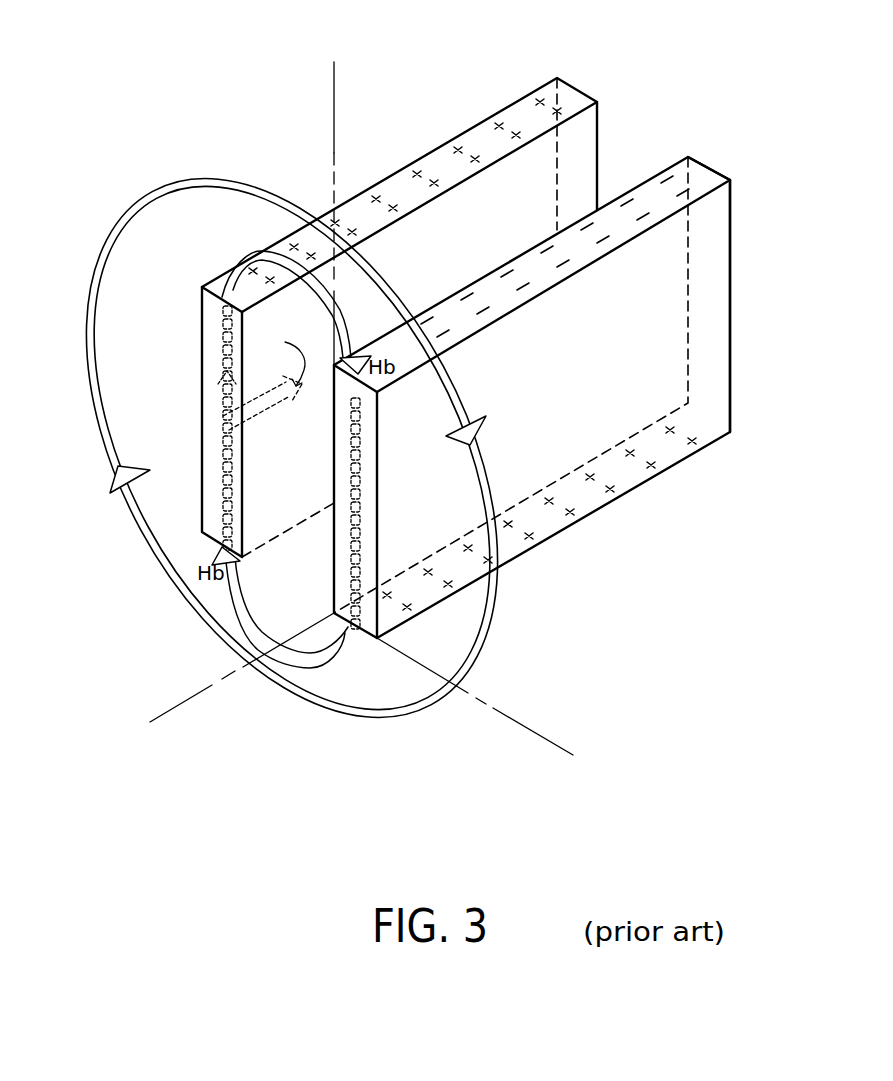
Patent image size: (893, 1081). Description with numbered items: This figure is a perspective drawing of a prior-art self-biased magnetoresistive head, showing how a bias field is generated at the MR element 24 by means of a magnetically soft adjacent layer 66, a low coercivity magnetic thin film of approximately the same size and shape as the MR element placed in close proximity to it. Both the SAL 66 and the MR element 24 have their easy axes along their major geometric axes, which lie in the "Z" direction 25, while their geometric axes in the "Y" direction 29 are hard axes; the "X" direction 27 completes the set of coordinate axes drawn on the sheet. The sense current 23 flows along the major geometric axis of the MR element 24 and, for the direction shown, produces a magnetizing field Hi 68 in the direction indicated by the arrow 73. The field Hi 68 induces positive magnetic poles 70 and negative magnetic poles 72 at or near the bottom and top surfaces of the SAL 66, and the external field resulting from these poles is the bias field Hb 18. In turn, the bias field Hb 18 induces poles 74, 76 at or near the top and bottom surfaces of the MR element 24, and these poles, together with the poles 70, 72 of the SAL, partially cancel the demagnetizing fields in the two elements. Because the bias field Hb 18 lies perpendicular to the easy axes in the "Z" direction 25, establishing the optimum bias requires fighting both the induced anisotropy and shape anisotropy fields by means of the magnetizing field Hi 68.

The bias field Hb 18 is at (555, 397).
The sense current 23 is at (264, 388).
The MR element 24 is at (362, 333).
The "Z" direction 25 is at (148, 722).
The X axis 27 is at (527, 725).
The "Y" direction 29 is at (336, 80).
The soft adjacent layer 66 is at (706, 383).
The magnetizing field Hi 68 is at (292, 446).
The positive magnetic poles 70 is at (617, 497).
The negative magnetic poles 72 is at (672, 178).
The arrow 73 is at (114, 492).
The poles of the MR element 74 is at (312, 518).
The poles of the MR element 76 is at (458, 151).